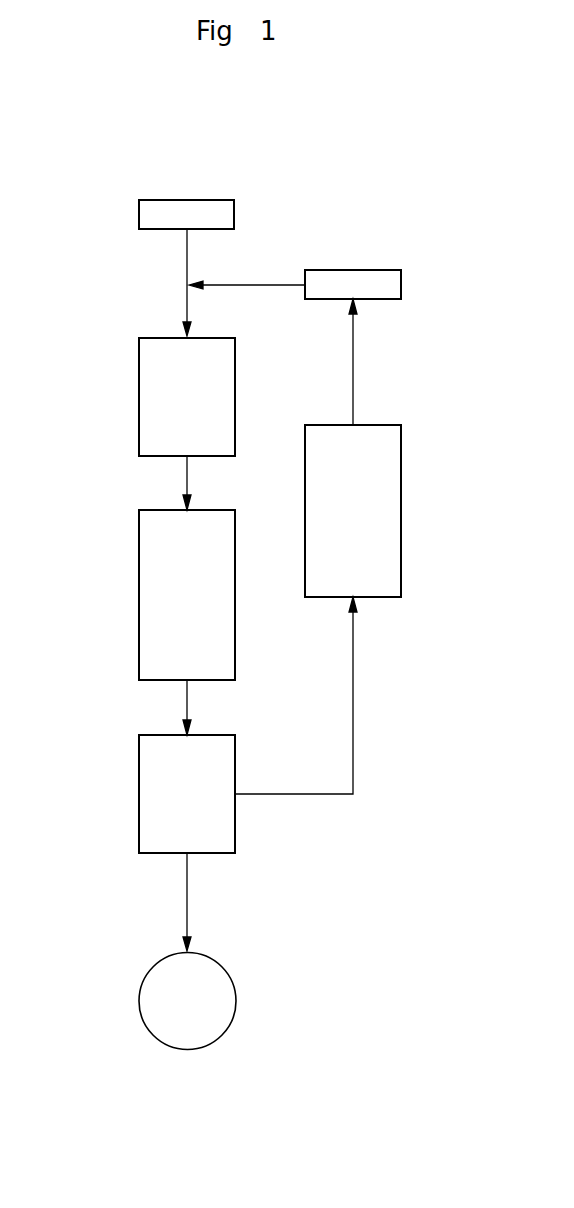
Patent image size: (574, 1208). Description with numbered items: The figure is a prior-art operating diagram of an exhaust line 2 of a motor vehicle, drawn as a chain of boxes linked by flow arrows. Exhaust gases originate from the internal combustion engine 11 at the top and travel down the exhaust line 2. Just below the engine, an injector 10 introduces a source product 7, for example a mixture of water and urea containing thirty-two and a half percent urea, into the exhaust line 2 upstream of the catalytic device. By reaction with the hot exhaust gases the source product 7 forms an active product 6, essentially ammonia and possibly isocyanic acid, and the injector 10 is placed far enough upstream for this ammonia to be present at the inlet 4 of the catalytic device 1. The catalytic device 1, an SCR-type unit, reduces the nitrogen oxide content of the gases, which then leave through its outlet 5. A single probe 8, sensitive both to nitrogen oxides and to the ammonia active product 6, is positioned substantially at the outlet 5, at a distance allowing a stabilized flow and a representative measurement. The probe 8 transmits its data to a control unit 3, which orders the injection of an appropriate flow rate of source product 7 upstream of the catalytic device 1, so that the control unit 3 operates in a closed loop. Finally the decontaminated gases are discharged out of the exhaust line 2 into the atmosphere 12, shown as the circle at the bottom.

The catalytic device 1 is at (139, 594).
The exhaust line 2 is at (187, 258).
The control unit 3 is at (401, 508).
The inlet 4 is at (185, 510).
The outlet 5 is at (185, 680).
The active product 6 is at (139, 398).
The source product 7 is at (401, 270).
The probe 8 is at (139, 793).
The injector 10 is at (187, 287).
The internal combustion engine 11 is at (139, 205).
The atmosphere 12 is at (140, 1001).